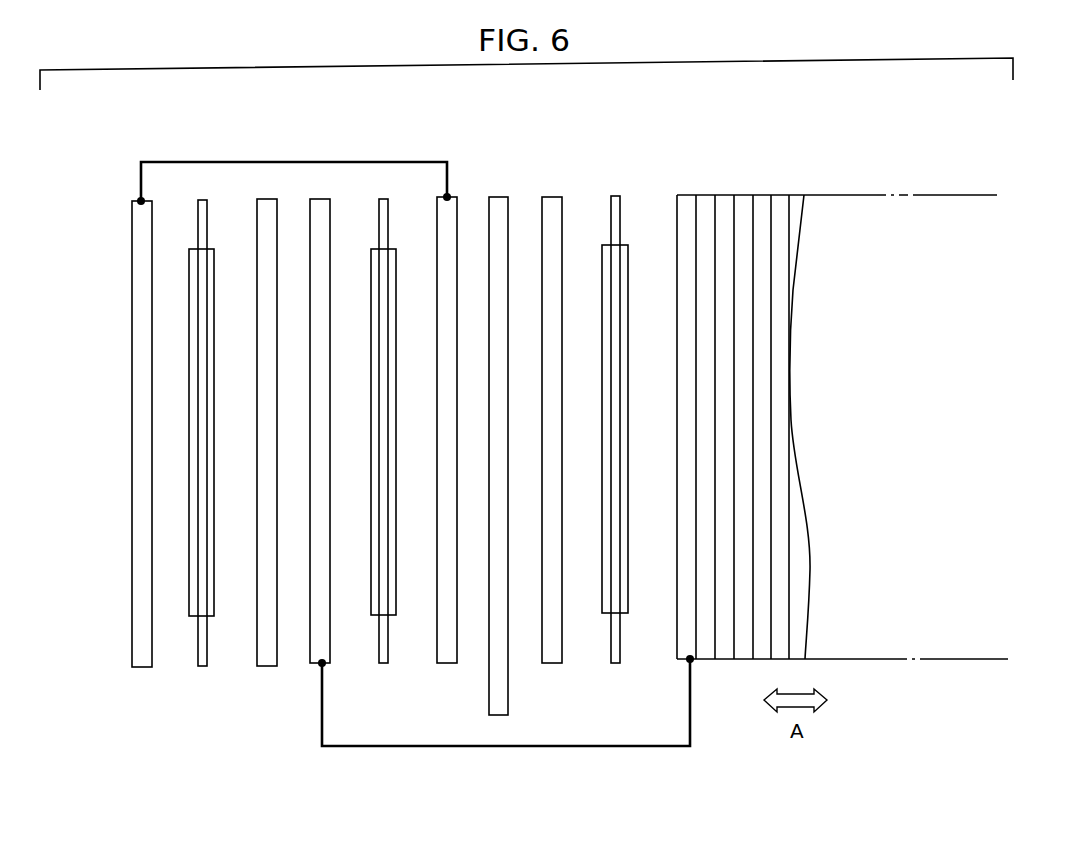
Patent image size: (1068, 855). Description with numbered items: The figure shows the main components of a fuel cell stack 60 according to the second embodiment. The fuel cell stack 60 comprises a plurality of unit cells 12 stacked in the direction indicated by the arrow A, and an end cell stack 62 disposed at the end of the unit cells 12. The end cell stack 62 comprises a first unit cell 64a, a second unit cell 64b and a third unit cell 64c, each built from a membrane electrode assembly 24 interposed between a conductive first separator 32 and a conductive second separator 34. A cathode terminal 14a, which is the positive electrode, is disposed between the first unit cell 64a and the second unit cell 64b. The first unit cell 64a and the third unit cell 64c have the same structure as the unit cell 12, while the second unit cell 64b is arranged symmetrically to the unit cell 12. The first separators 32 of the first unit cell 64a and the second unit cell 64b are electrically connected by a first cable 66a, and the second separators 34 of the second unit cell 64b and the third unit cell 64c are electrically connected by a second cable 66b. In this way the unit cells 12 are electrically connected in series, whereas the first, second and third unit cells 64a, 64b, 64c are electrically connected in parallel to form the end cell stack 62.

The unit cell 12 is at (770, 187).
The cathode terminal 14a is at (497, 208).
The membrane electrode assembly 24 is at (203, 212).
The first separator 32 is at (267, 212).
The second separator 34 is at (136, 212).
The fuel cell stack 60 is at (453, 104).
The end cell stack 62 is at (676, 130).
The first unit cell 64a is at (617, 672).
The second unit cell 64b is at (392, 676).
The third unit cell 64c is at (190, 688).
The first cable 66a is at (546, 745).
The second cable 66b is at (173, 161).